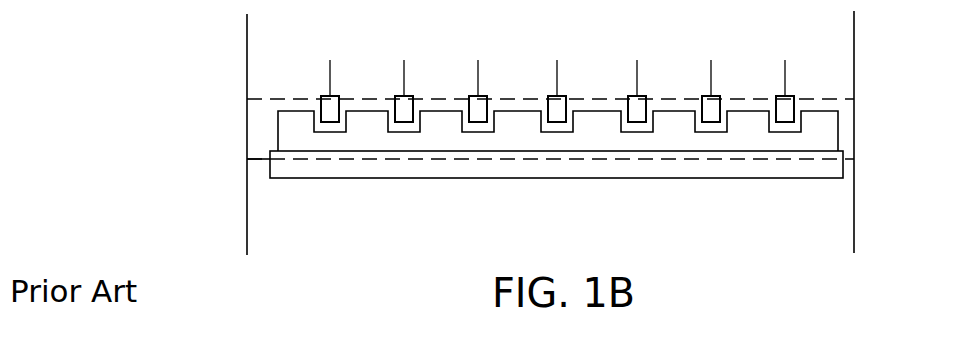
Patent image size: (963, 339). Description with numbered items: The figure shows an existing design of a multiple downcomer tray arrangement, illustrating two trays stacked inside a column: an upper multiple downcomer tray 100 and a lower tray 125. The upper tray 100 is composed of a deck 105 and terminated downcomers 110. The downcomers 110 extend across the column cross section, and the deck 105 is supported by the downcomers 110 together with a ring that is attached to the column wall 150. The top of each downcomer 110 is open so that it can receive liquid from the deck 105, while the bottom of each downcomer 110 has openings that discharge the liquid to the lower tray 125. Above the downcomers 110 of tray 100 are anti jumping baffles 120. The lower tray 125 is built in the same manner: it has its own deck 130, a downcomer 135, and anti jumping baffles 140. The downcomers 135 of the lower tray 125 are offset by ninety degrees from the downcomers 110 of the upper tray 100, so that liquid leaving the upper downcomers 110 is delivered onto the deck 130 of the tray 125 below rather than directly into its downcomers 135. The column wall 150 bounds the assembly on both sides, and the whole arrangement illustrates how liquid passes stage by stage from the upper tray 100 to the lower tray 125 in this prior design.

The multiple downcomer tray 100 is at (233, 87).
The deck 105 is at (295, 98).
The terminated downcomers 110 is at (332, 100).
The anti jumping baffles 120 is at (786, 70).
The lower tray 125 is at (241, 143).
The deck 130 is at (257, 158).
The downcomers 135 is at (808, 165).
The anti jumping baffles 140 is at (822, 136).
The column wall 150 is at (856, 40).